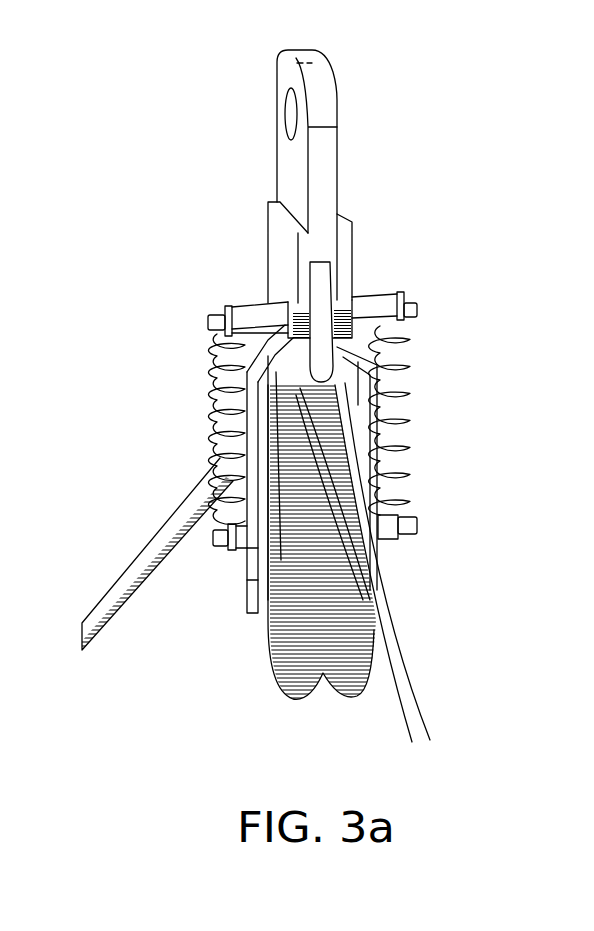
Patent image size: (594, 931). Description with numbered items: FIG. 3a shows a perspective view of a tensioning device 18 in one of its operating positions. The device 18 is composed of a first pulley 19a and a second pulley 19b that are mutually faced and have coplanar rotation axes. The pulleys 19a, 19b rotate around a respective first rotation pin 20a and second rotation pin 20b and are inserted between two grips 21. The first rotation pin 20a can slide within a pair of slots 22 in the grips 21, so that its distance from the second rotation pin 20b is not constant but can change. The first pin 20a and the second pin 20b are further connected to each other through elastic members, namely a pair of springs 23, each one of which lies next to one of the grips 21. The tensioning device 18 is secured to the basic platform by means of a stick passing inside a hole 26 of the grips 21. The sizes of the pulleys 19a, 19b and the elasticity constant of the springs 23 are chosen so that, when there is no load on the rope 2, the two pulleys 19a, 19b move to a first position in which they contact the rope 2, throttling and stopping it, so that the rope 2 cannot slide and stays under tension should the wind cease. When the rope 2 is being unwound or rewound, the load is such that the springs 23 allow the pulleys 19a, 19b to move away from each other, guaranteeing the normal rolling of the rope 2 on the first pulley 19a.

The rope 2 is at (150, 538).
The tensioning device 18 is at (170, 250).
The first pulley 19a is at (280, 655).
The second pulley 19b is at (328, 302).
The first rotation pin 20a is at (225, 538).
The second rotation pin 20b is at (223, 313).
The grips 21 is at (257, 409).
The slots 22 is at (247, 568).
The springs 23 is at (223, 356).
The hole 26 is at (296, 108).